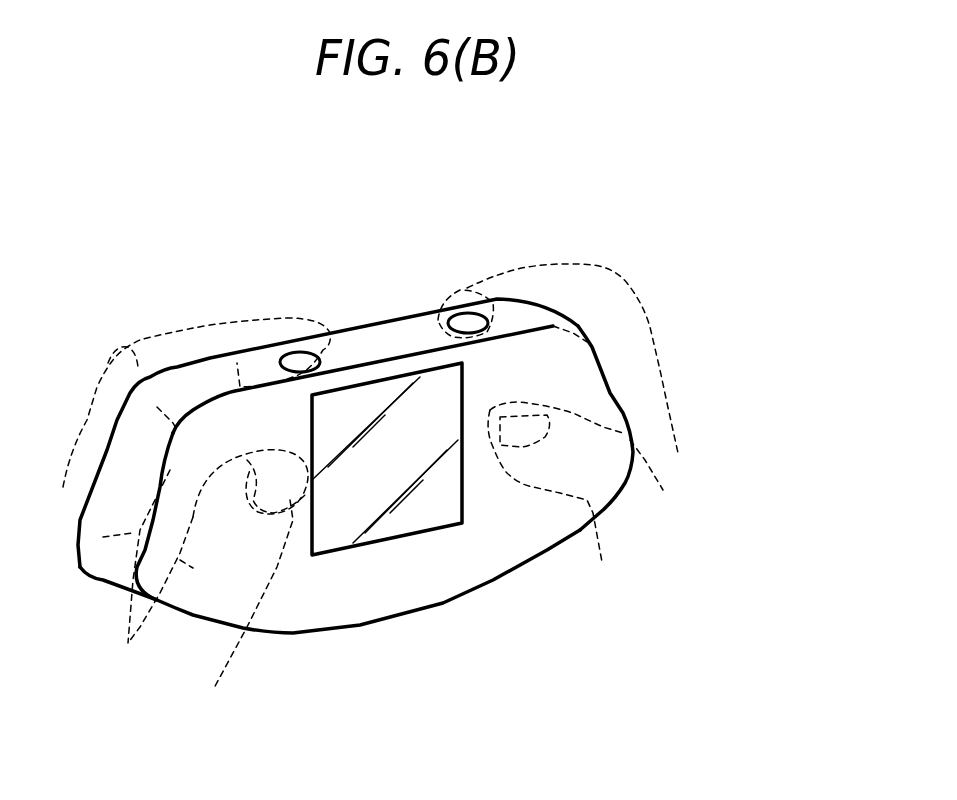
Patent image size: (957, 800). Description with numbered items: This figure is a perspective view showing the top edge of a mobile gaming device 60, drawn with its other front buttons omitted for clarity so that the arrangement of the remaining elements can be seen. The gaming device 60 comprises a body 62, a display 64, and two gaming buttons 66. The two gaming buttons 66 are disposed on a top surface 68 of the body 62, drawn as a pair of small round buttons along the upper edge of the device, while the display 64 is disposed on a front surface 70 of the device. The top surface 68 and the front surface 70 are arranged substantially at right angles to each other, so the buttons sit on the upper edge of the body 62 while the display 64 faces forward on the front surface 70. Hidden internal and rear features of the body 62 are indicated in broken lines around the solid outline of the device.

The gaming device 60 is at (410, 205).
The body 62 is at (565, 372).
The display 64 is at (350, 540).
The gaming buttons 66 is at (295, 355).
The top surface 68 is at (383, 337).
The front surface 70 is at (437, 592).